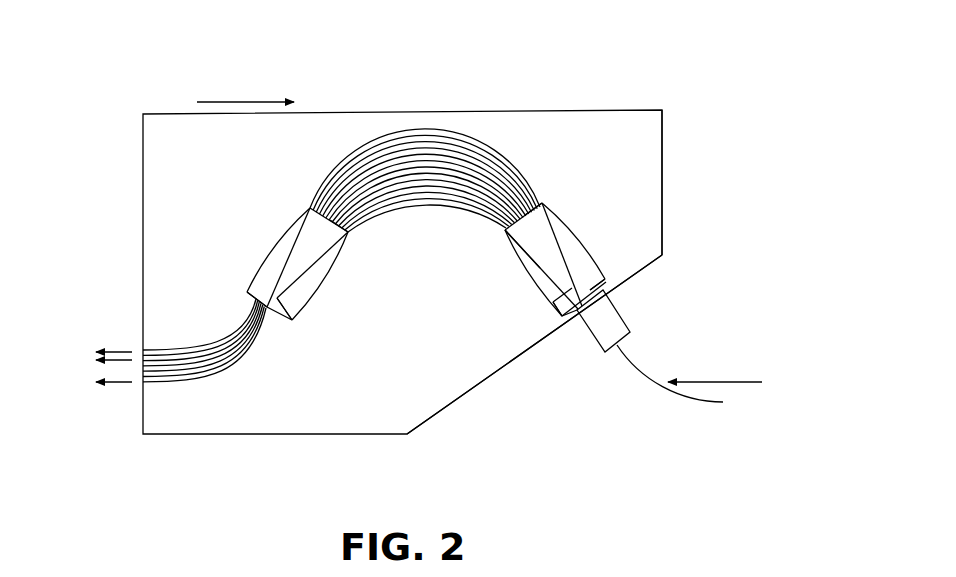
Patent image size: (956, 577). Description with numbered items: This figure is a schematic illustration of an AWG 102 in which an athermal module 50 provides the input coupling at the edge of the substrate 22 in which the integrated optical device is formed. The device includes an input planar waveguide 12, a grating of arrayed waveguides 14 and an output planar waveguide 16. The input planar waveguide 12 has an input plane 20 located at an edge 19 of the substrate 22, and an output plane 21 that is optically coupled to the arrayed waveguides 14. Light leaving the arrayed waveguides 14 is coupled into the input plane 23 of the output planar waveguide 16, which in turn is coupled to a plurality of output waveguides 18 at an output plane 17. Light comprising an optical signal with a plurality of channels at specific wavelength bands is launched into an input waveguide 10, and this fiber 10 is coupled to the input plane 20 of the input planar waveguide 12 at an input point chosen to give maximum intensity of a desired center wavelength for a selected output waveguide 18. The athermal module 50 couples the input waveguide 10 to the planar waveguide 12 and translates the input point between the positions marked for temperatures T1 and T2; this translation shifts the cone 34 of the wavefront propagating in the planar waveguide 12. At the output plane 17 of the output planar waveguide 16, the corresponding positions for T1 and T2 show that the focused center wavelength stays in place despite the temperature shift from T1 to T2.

The input waveguide 10 is at (351, 103).
The input planar waveguide 12 is at (562, 222).
The arrayed waveguides 14 is at (432, 207).
The output planar waveguide 16 is at (273, 242).
The output plane 17 is at (268, 320).
The output waveguides 18 is at (210, 370).
The edge 19 is at (442, 408).
The input plane 20 is at (577, 318).
The output plane 21 is at (545, 204).
The substrate 22 is at (627, 148).
The input plane 23 is at (352, 232).
The cone 34 is at (516, 235).
The athermal module 50 is at (610, 320).
The AWG 102 is at (672, 157).
The first temperature T1 is at (614, 252).
The second temperature T2 is at (292, 318).